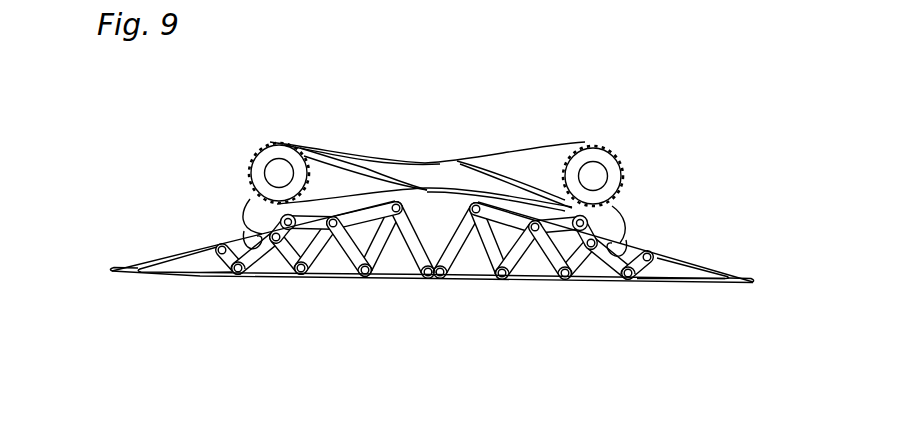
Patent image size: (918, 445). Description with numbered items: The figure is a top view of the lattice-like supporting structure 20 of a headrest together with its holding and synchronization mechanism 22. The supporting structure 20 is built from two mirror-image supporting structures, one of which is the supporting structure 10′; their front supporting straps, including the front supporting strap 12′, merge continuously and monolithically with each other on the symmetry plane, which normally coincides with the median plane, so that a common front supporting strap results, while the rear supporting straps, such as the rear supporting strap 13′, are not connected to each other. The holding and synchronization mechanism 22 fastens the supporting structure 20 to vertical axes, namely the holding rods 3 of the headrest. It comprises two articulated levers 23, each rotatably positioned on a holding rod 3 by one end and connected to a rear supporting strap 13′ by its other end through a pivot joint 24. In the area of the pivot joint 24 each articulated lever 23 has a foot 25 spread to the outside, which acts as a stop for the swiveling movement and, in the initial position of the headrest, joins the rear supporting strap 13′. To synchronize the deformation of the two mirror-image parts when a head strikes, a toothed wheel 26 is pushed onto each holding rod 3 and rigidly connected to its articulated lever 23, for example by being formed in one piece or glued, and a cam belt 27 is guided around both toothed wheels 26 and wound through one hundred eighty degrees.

The holding rod 3 is at (273, 171).
The supporting structure 10′ is at (172, 280).
The front supporting strap 12′ is at (272, 279).
The rear supporting strap 13′ is at (178, 254).
The lattice-like supporting structure 20 is at (428, 300).
The holding and synchronization mechanism 22 is at (378, 130).
The articulated lever 23 is at (258, 210).
The pivot joint 24 is at (330, 278).
The foot 25 is at (242, 236).
The toothed wheel 26 is at (272, 139).
The cam belt 27 is at (508, 150).